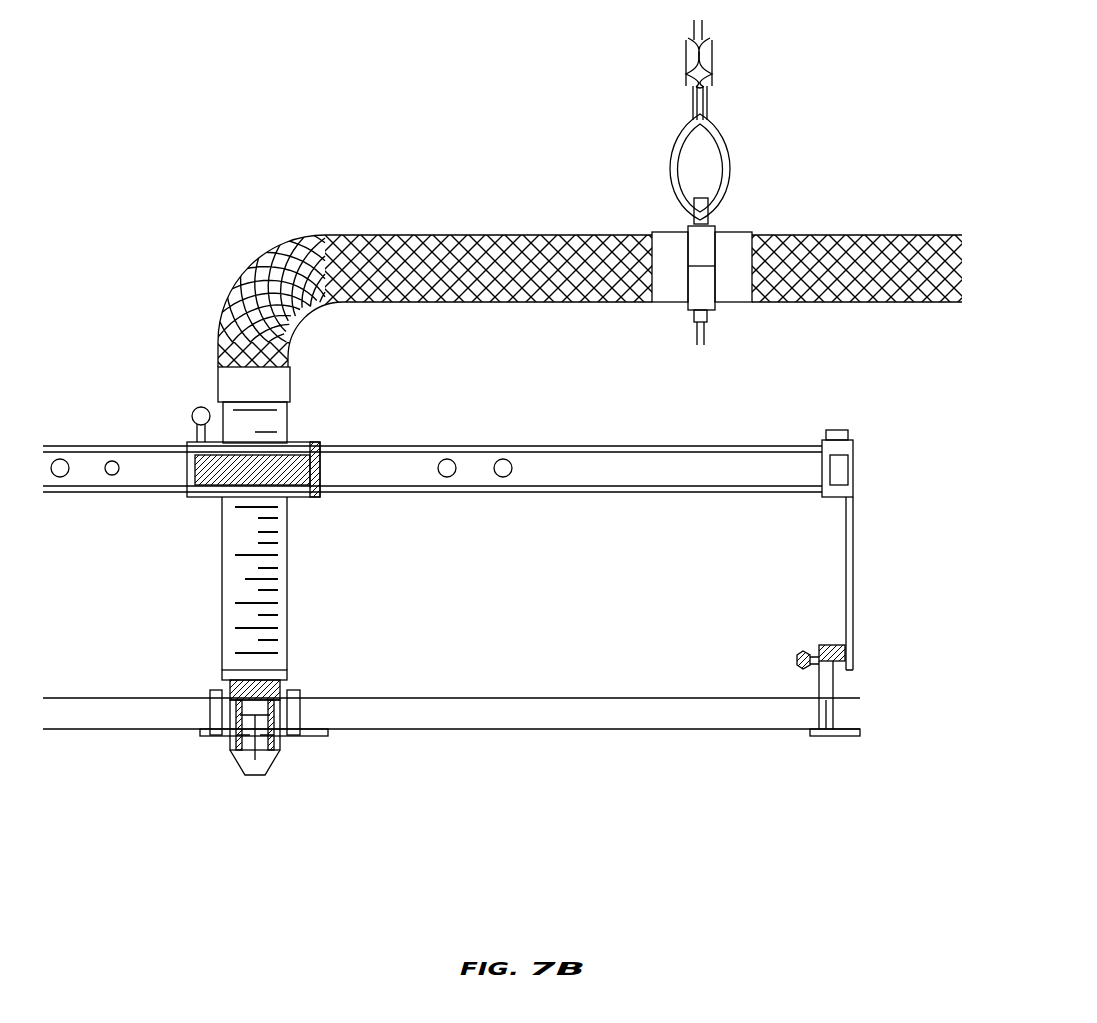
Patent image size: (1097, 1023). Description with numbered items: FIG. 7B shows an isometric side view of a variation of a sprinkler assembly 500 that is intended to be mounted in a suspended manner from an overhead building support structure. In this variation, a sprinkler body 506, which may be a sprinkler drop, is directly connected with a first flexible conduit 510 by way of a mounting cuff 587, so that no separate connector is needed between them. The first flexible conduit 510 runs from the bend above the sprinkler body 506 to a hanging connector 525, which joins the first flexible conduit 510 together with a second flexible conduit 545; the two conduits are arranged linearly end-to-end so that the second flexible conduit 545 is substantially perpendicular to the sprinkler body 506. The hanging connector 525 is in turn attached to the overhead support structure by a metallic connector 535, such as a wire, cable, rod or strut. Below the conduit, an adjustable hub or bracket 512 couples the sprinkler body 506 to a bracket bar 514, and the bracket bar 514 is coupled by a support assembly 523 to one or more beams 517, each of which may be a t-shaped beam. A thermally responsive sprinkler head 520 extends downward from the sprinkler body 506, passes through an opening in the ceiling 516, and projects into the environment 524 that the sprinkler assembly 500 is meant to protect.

The sprinkler assembly 500 is at (250, 72).
The first flexible conduit 510 is at (428, 238).
The second flexible conduit 545 is at (856, 238).
The metallic connector 535 is at (704, 34).
The hanging connector 525 is at (650, 208).
The mounting cuff 587 is at (284, 379).
The sprinkler body 506 is at (268, 431).
The adjustable hub or bracket 512 is at (176, 398).
The bracket bar 514 is at (622, 446).
The support assembly 523 is at (860, 570).
The beam 517 is at (850, 706).
The ceiling 516 is at (615, 727).
The environment 524 is at (575, 653).
The thermally responsive sprinkler head 520 is at (262, 788).